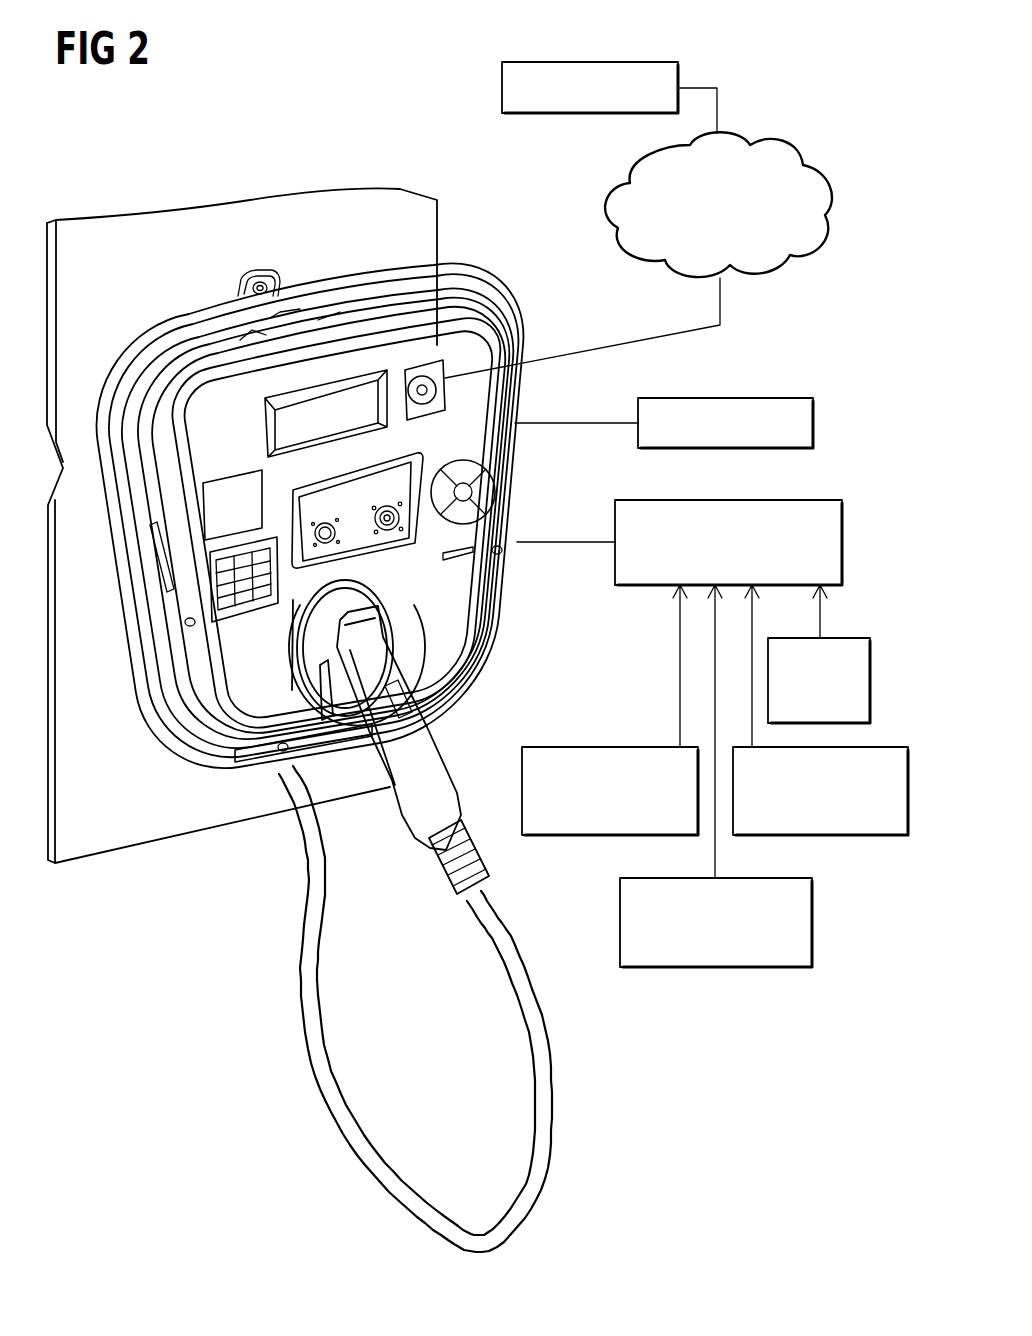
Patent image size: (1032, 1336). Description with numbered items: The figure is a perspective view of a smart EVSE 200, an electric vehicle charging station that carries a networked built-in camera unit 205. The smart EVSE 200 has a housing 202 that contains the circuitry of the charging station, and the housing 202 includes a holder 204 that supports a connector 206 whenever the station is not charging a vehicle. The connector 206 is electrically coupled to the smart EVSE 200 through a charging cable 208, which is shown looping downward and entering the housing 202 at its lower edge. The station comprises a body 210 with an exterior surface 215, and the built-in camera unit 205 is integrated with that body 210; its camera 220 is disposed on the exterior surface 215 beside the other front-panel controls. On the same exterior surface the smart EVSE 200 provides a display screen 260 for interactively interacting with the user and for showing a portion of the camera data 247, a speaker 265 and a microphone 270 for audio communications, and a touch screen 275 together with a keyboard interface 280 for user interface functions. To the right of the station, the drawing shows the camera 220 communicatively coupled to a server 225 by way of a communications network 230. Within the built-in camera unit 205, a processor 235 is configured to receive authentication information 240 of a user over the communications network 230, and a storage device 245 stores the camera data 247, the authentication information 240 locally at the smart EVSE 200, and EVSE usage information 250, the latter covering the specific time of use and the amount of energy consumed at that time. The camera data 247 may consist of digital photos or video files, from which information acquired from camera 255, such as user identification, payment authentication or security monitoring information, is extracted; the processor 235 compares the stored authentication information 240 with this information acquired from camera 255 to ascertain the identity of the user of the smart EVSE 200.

The smart EVSE 200 is at (169, 283).
The housing 202 is at (510, 310).
The holder 204 is at (377, 600).
The built-in camera unit 205 is at (423, 382).
The connector 206 is at (322, 652).
The charging cable 208 is at (300, 977).
The body 210 is at (251, 452).
The exterior surface 215 is at (227, 747).
The camera 220 is at (425, 410).
The server 225 is at (502, 85).
The communications network 230 is at (783, 148).
The processor 235 is at (753, 398).
The authentication information 240 is at (600, 747).
The storage device 245 is at (826, 500).
The camera data 247 is at (850, 638).
The EVSE usage information 250 is at (845, 835).
The information acquired from camera 255 is at (722, 967).
The display screen 260 is at (346, 422).
The speaker 265 is at (483, 490).
The microphone 270 is at (460, 557).
The touch screen 275 is at (251, 520).
The keyboard interface 280 is at (213, 583).